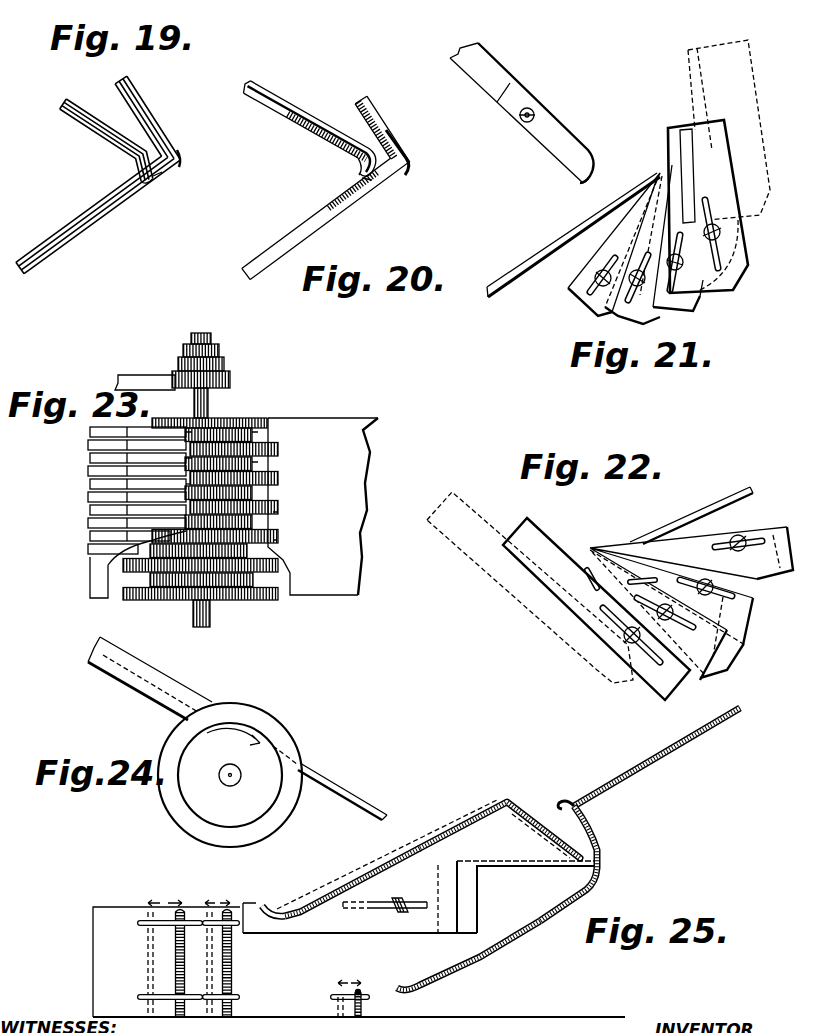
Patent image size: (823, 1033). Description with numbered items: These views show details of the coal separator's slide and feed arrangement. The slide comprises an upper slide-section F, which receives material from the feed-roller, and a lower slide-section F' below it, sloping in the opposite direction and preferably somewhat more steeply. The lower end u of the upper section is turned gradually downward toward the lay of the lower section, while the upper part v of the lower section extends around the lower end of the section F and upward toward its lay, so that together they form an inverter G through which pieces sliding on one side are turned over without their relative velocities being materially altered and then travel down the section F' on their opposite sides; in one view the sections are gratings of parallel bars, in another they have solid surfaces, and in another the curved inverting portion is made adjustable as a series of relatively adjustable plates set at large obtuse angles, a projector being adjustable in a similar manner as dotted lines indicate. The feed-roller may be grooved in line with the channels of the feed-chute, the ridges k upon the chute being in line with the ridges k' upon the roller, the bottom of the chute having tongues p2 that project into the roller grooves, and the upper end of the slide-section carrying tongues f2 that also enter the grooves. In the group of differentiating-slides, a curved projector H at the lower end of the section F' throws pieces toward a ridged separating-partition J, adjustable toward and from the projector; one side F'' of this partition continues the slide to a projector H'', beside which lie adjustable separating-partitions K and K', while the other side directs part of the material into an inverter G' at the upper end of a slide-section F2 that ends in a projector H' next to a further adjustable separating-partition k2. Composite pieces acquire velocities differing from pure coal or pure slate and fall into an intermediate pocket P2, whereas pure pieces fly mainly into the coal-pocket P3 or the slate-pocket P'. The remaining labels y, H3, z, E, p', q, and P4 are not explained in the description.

In FIG. 19, the upper slide-section F is at (94, 129).
In FIG. 20, the upper slide-section F is at (310, 126).
In FIG. 21, the upper slide-section F is at (522, 113).
In FIG. 22, the upper slide-section F is at (691, 515).
In FIG. 23, the upper slide-section F is at (323, 506).
In FIG. 19, the lower slide-section F' is at (98, 215).
In FIG. 20, the lower slide-section F' is at (326, 187).
In FIG. 21, the lower slide-section F' is at (573, 235).
In FIG. 24, the lower slide-section F' is at (342, 791).
In FIG. 25, the lower slide-section F' is at (657, 757).
In FIG. 25, the side of separating-partition F'' is at (387, 858).
In FIG. 25, the slide-section F2 is at (528, 900).
In FIG. 19, the upper arm / stop plate y is at (147, 117).
In FIG. 21, the upper arm / stop plate y is at (713, 130).
In FIG. 19, the lower end of upper section u is at (136, 171).
In FIG. 21, the lower end of upper section u is at (595, 158).
In FIG. 19, the upper part of lower section v is at (187, 159).
In FIG. 20, the upper part of lower section v is at (417, 165).
In FIG. 19, the inverter G is at (156, 174).
In FIG. 20, the inverter G is at (377, 175).
In FIG. 21, the inverter G is at (658, 222).
In FIG. 25, the inverter G' is at (588, 863).
In FIG. 25, the projector H is at (567, 792).
In FIG. 25, the projector H' is at (465, 955).
In FIG. 25, the projector H'' is at (360, 906).
In FIG. 22, the pivoted plates H3 is at (610, 596).
In FIG. 25, the ridged separating-partition J is at (506, 801).
In FIG. 23, the stepped pulley z is at (206, 358).
In FIG. 23, the shaft E is at (196, 505).
In FIG. 24, the shaft E is at (230, 775).
In FIG. 23, the ridges k is at (111, 512).
In FIG. 24, the ridges k is at (155, 683).
In FIG. 23, the ridges k' is at (289, 533).
In FIG. 24, the ridges k' is at (275, 719).
In FIG. 25, the separating-partition k2 is at (385, 965).
In FIG. 23, the bar p' is at (114, 494).
In FIG. 24, the bar p' is at (144, 678).
In FIG. 23, the tongues p2 is at (180, 464).
In FIG. 23, the tongues f2 is at (258, 497).
In FIG. 24, the direction of rotation q is at (225, 750).
In FIG. 25, the separating-partition K is at (236, 958).
In FIG. 25, the separating-partition K' is at (146, 958).
In FIG. 25, the slate-pocket P' is at (365, 1005).
In FIG. 25, the intermediate pocket P2 is at (322, 997).
In FIG. 25, the coal-pocket P3 is at (188, 970).
In FIG. 25, the cross bar P4 is at (170, 1000).